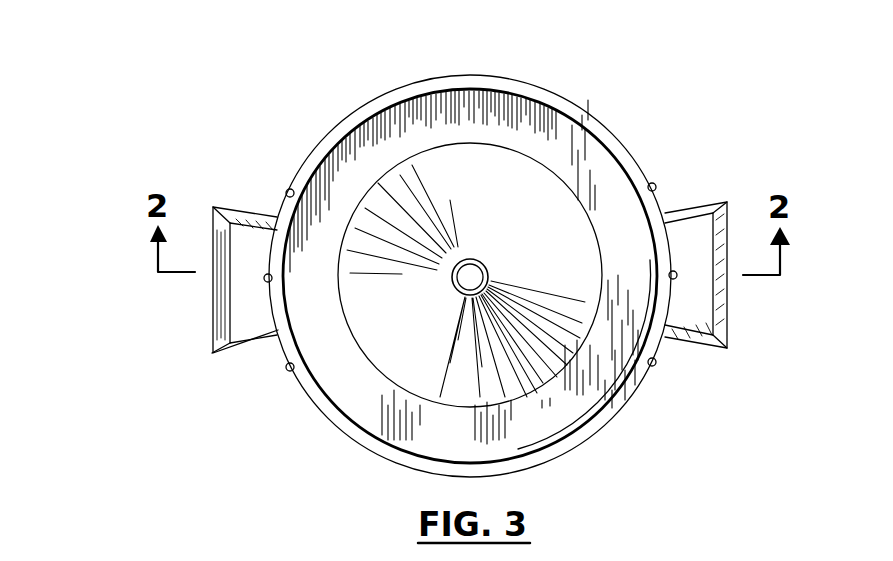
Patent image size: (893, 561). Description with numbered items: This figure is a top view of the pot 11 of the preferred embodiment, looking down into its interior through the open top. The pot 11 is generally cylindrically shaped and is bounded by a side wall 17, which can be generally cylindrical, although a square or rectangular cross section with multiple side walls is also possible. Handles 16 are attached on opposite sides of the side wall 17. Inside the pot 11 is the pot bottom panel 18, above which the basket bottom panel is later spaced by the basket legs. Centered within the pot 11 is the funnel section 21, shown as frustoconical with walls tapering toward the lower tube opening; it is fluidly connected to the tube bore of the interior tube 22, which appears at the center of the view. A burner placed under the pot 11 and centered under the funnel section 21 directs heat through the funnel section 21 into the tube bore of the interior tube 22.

The pot 11 is at (315, 398).
The handles 16 is at (236, 214).
The side wall 17 is at (622, 153).
The pot bottom panel 18 is at (532, 130).
The funnel section 21 is at (390, 330).
The interior tube 22 is at (488, 264).